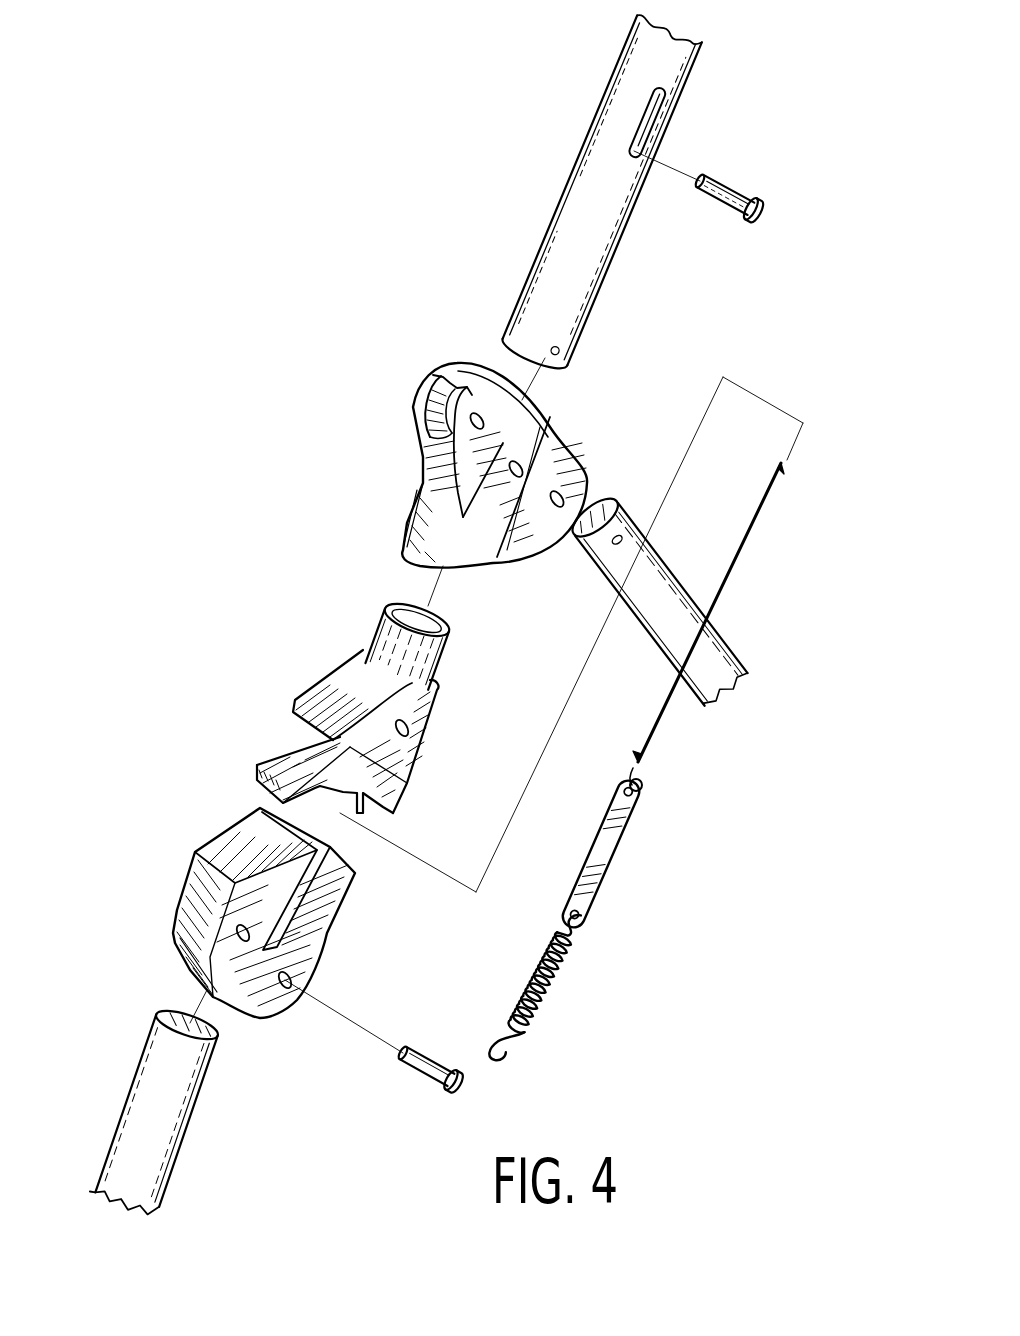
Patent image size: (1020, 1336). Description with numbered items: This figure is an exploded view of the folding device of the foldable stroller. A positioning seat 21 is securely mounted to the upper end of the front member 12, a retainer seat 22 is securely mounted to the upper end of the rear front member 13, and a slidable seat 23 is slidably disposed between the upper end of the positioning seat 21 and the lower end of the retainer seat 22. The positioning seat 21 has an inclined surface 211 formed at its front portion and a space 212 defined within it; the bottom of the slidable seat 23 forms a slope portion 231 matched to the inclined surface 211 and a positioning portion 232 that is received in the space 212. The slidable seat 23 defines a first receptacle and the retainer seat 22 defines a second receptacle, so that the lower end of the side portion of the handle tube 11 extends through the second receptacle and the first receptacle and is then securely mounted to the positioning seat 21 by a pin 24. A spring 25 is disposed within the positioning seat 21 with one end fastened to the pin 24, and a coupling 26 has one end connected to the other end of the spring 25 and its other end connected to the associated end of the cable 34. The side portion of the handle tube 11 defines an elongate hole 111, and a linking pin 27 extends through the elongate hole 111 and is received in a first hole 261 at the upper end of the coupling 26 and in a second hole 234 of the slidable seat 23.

The handle tube 11 is at (627, 205).
The elongate hole 111 is at (663, 97).
The linking pin 27 is at (735, 186).
The retainer seat 22 is at (557, 430).
The rear front member 13 is at (660, 560).
The cable 34 is at (760, 522).
The slidable seat 23 is at (450, 648).
The second hole 234 is at (407, 731).
The slope portion 231 is at (336, 734).
The positioning portion 232 is at (392, 801).
The positioning seat 21 is at (291, 913).
The inclined surface 211 is at (227, 840).
The space 212 is at (330, 852).
The front member 12 is at (192, 1091).
The pin 24 is at (430, 1077).
The spring 25 is at (560, 974).
The coupling 26 is at (637, 849).
The first hole 261 is at (643, 789).